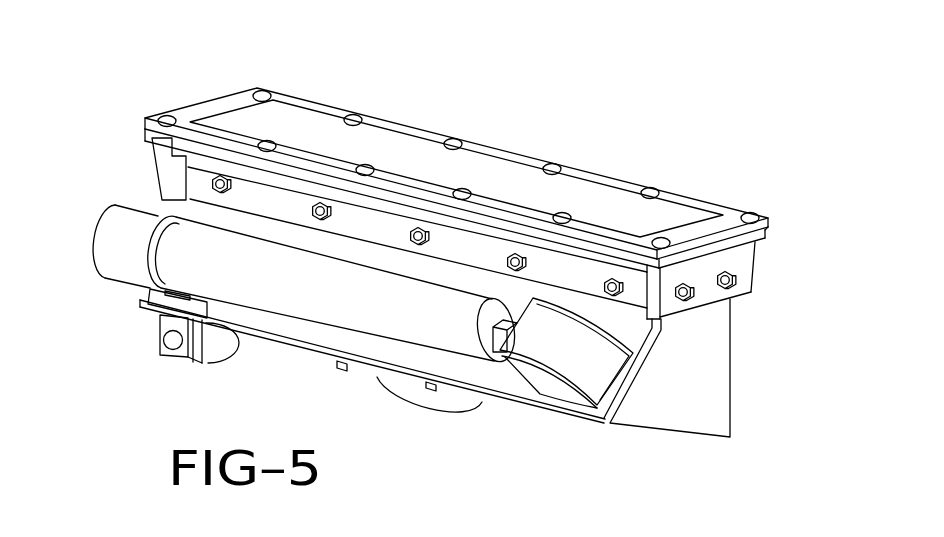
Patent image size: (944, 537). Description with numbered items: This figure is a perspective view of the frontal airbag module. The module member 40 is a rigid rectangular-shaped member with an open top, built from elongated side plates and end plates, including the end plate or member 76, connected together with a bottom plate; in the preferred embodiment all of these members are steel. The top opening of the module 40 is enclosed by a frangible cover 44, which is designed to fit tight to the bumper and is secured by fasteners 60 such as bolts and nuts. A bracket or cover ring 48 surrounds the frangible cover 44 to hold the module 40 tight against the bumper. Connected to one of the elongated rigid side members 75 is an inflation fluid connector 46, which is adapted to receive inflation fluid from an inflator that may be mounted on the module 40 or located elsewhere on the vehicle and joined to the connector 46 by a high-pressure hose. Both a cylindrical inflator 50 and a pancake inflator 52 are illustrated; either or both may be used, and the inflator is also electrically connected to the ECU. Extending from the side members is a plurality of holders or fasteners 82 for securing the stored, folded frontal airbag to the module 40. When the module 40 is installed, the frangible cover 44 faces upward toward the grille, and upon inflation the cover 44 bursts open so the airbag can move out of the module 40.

The module member 40 is at (745, 410).
The frangible cover 44 is at (609, 203).
The inflation fluid connector 46 is at (594, 363).
The bracket or cover ring 48 is at (699, 205).
The cylindrical inflator 50 is at (124, 262).
The pancake inflator 52 is at (408, 387).
The fasteners 60 is at (356, 116).
The elongated rigid side member 75 is at (517, 383).
The end plate or member 76 is at (683, 402).
The holders or fasteners 82 is at (213, 184).